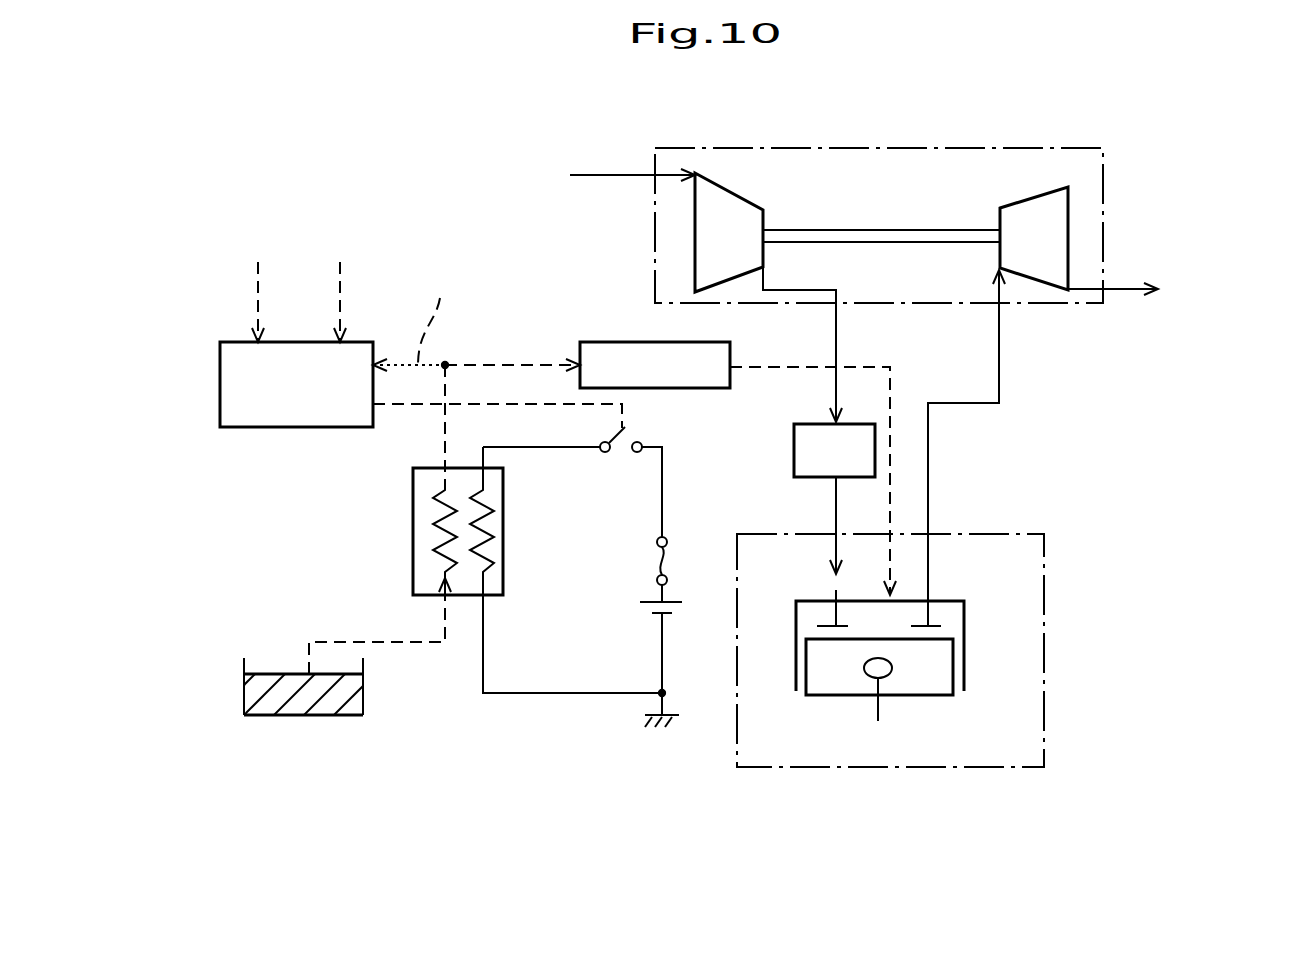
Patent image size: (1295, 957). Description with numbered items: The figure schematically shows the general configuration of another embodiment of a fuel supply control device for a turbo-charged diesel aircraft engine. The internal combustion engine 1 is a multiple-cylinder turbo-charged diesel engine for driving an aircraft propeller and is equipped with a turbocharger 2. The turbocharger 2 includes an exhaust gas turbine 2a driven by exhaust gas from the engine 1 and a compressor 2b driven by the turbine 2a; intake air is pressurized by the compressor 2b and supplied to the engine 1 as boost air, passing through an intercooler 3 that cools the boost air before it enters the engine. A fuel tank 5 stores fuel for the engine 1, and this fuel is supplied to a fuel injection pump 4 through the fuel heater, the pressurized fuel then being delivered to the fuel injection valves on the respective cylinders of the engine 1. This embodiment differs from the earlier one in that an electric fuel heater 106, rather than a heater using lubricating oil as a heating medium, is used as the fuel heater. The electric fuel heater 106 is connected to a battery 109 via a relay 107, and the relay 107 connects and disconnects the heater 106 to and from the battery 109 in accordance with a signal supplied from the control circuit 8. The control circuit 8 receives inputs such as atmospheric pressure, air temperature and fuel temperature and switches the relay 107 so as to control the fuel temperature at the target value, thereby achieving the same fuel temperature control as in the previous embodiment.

The internal combustion engine 1 is at (1044, 540).
The turbocharger 2 is at (1103, 200).
The exhaust gas turbine 2a is at (1068, 226).
The compressor 2b is at (695, 232).
The intercooler 3 is at (794, 424).
The fuel injection pump 4 is at (580, 343).
The fuel tank 5 is at (363, 715).
The control circuit 8 is at (280, 427).
The electric fuel heater 106 is at (503, 555).
The relay 107 is at (608, 456).
The battery 109 is at (638, 610).